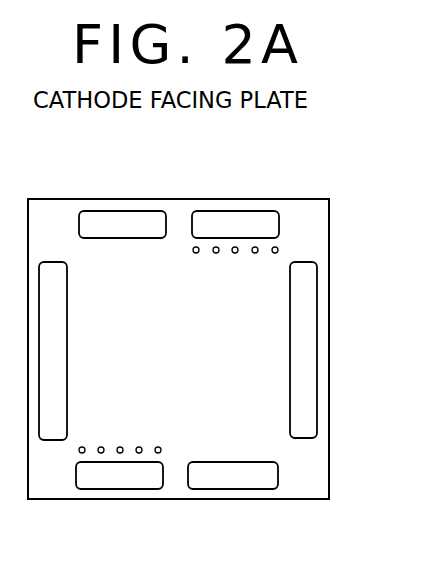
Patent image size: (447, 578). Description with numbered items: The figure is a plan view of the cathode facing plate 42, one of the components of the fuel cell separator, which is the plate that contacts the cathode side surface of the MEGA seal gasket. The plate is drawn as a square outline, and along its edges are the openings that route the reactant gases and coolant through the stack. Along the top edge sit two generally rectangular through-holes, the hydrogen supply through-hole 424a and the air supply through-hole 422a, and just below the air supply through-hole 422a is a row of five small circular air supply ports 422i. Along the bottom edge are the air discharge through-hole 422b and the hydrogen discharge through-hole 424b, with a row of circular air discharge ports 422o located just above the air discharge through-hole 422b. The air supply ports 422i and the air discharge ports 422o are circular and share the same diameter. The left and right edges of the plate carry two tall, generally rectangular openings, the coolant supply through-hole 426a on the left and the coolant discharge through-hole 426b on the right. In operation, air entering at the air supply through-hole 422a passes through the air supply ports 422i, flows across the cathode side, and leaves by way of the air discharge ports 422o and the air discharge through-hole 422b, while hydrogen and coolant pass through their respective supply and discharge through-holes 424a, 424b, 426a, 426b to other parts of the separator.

The cathode facing plate 42 is at (305, 199).
The hydrogen supply through-hole 424a is at (135, 211).
The air supply through-hole 422a is at (242, 211).
The air supply ports 422i is at (215, 254).
The air discharge ports 422o is at (138, 447).
The coolant supply through-hole 426a is at (52, 441).
The coolant discharge through-hole 426b is at (305, 439).
The air discharge through-hole 422b is at (123, 490).
The hydrogen discharge through-hole 424b is at (228, 490).